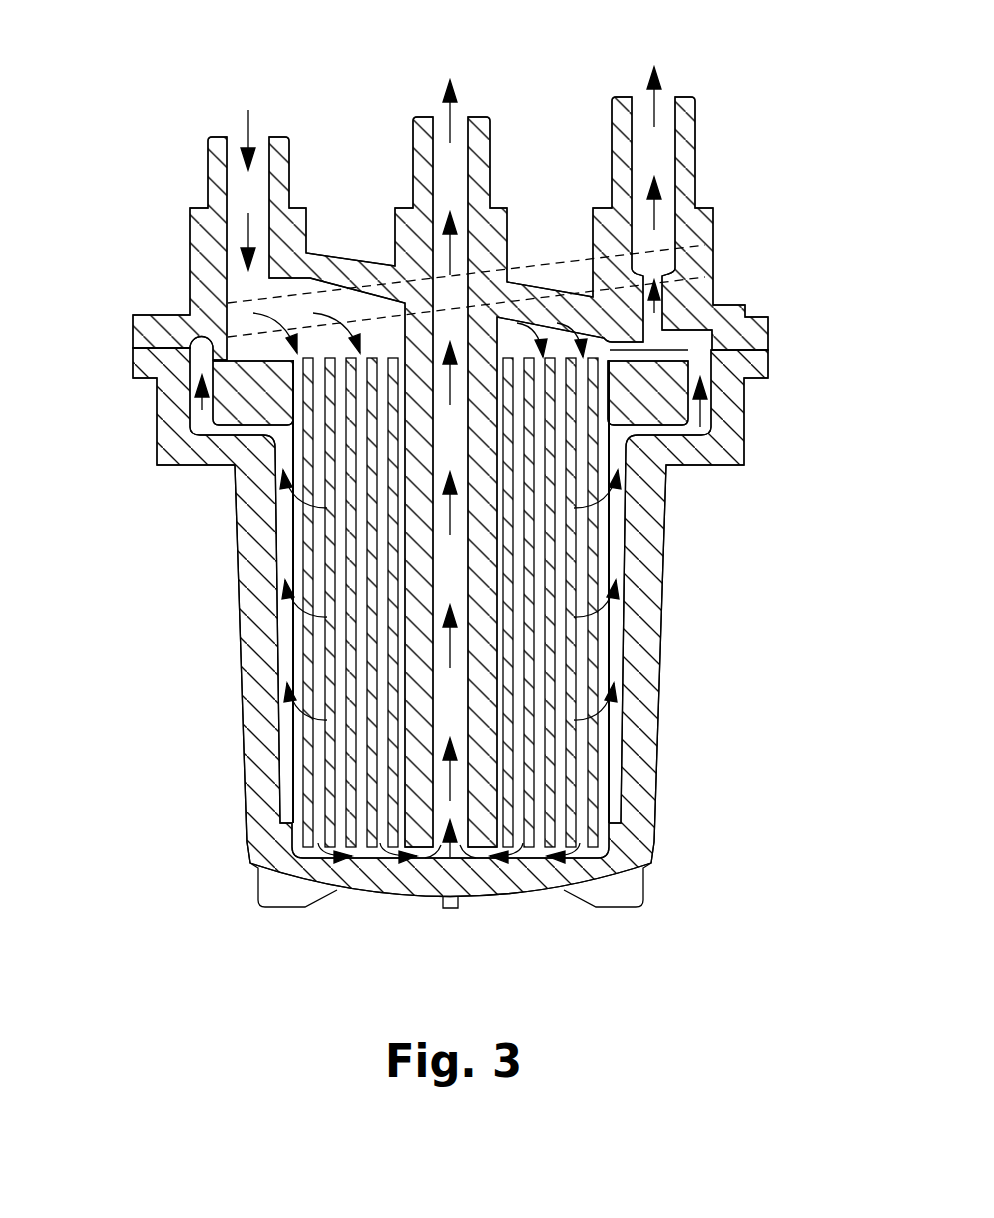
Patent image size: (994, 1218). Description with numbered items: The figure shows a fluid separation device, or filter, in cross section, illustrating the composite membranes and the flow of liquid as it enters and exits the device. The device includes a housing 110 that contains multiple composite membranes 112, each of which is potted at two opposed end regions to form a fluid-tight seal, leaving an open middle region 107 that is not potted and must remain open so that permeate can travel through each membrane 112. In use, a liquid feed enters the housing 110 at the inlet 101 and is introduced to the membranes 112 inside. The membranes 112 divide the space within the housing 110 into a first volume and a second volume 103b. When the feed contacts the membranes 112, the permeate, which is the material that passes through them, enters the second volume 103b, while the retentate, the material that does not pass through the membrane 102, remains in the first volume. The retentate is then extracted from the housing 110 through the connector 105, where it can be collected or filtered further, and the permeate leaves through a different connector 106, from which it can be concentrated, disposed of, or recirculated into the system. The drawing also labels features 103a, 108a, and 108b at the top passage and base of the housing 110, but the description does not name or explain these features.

The feed inlet 101 is at (237, 152).
The membrane 102 is at (290, 528).
The lower flow passage 103a is at (412, 865).
The second volume 103b is at (283, 617).
The connector 105 is at (458, 130).
The permeate connector 106 is at (665, 110).
The open middle region 107 is at (658, 352).
The upper internal passage 108a is at (593, 197).
The lower housing base 108b is at (507, 897).
The housing 110 is at (640, 752).
The composite membranes 112 is at (593, 630).